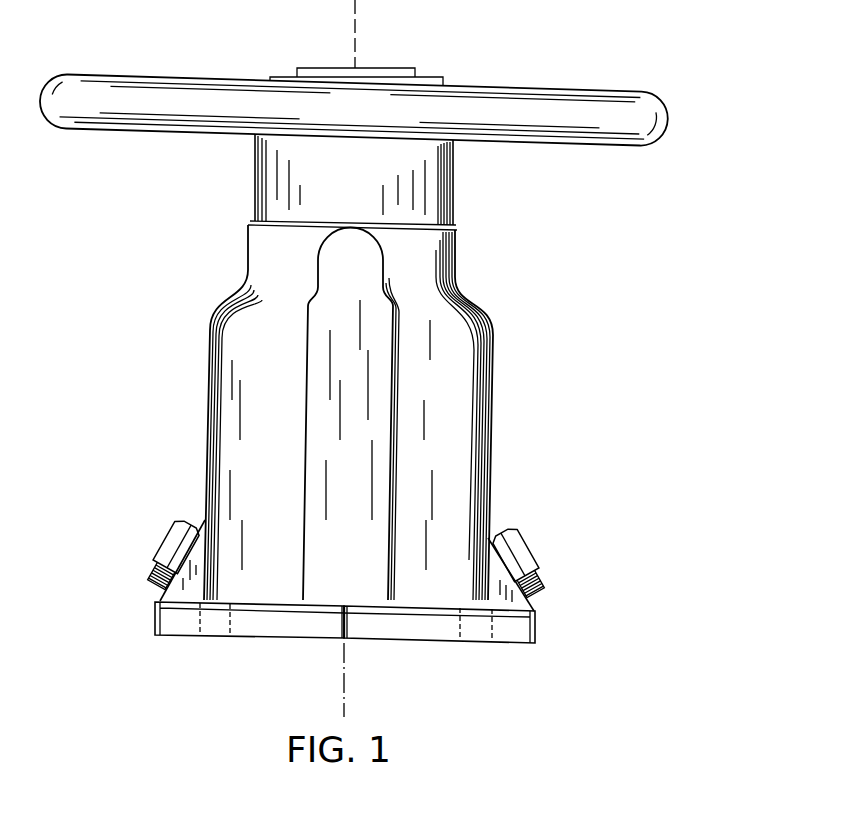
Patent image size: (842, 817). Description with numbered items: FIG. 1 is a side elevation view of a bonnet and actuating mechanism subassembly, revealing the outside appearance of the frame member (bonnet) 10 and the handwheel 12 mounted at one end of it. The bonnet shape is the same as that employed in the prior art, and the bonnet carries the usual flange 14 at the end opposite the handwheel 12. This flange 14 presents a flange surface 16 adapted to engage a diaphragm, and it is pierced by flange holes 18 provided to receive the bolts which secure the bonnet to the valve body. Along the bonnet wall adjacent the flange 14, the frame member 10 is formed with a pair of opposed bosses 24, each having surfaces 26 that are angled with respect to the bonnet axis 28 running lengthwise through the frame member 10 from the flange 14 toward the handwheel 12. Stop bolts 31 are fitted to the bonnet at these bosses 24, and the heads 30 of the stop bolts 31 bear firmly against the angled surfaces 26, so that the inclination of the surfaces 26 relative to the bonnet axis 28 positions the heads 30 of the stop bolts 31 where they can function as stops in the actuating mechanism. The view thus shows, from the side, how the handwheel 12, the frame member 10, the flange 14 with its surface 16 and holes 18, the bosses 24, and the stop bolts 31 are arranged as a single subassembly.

The frame member (bonnet) 10 is at (503, 382).
The handwheel 12 is at (537, 136).
The flange 14 is at (286, 618).
The flange surface 16 is at (428, 641).
The flange holes 18 is at (200, 616).
The bosses 24 is at (183, 582).
The surfaces 26 is at (348, 534).
The bonnet axis 28 is at (343, 683).
The heads 30 is at (177, 550).
The stop bolts 31 is at (349, 534).